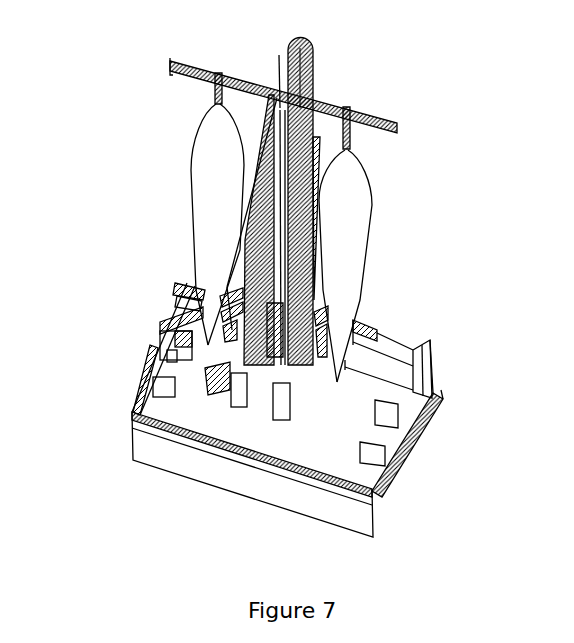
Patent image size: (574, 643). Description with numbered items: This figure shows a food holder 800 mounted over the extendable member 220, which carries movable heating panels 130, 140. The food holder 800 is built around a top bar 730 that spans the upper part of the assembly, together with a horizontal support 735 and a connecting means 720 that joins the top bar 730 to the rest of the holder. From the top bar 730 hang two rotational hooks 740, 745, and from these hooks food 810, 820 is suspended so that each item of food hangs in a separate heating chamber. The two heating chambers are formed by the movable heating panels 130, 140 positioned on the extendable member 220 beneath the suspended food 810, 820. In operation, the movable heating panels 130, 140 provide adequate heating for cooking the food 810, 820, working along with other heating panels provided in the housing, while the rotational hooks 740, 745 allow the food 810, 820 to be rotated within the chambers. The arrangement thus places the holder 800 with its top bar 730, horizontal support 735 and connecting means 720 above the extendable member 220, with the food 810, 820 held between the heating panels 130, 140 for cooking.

The food holder 800 is at (136, 92).
The top bar 730 is at (256, 88).
The horizontal support 735 is at (292, 77).
The connecting means 720 is at (318, 82).
The rotational hook 740 is at (210, 104).
The rotational hook 745 is at (353, 135).
The food 810 is at (201, 183).
The food 820 is at (360, 221).
The extendable member 220 is at (175, 473).
The movable heating panel 130 is at (240, 408).
The movable heating panel 140 is at (282, 422).